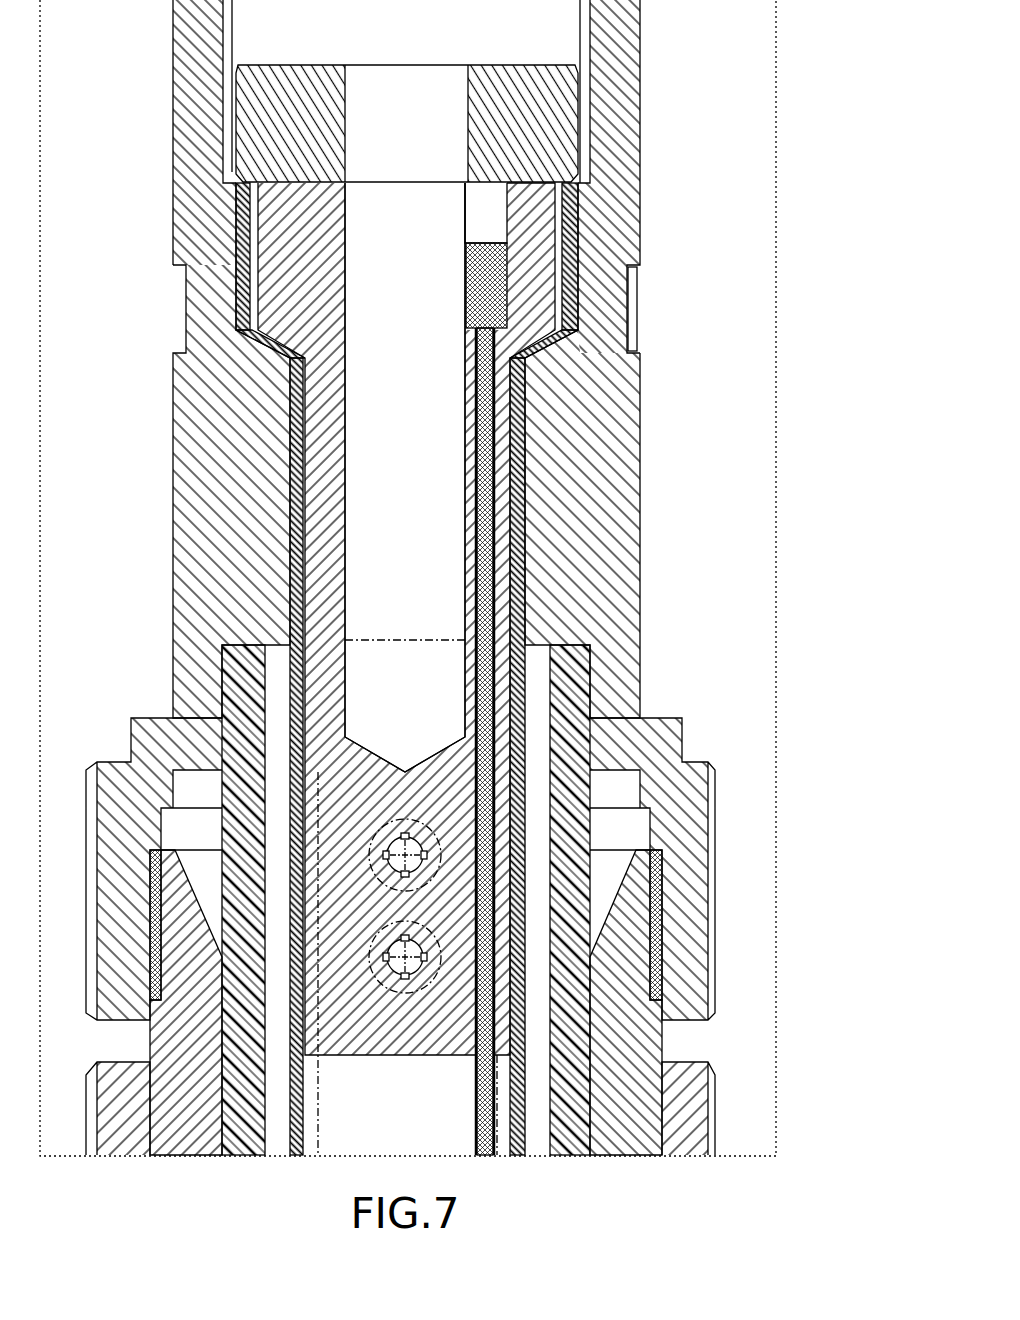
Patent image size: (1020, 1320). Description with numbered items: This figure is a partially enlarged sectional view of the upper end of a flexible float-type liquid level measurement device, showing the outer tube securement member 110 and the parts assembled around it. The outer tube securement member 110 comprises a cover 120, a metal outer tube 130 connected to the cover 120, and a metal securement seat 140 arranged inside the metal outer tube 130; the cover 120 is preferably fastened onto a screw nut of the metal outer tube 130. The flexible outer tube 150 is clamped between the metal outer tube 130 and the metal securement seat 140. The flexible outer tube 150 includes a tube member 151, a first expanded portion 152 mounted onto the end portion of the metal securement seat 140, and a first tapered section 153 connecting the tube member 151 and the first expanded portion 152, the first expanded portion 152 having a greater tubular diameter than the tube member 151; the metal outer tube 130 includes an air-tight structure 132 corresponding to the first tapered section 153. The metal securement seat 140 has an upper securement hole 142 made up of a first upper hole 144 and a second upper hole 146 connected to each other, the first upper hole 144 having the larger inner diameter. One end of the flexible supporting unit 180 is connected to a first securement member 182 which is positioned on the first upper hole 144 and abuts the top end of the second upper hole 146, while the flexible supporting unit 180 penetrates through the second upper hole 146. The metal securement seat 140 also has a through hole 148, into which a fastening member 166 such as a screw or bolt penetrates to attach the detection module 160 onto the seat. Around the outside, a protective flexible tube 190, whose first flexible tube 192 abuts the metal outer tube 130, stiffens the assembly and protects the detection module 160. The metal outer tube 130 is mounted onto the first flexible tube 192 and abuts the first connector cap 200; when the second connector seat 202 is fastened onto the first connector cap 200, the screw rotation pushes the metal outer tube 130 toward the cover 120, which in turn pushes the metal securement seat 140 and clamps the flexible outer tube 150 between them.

The outer tube securement member 110 is at (650, 72).
The cover 120 is at (250, 118).
The metal outer tube 130 is at (200, 540).
The air-tight structure 132 is at (492, 375).
The metal securement seat 140 is at (322, 485).
The upper securement hole 142 is at (712, 236).
The first upper hole 144 is at (500, 215).
The second upper hole 146 is at (625, 345).
The through hole 148 is at (403, 972).
The flexible outer tube 150 is at (96, 298).
The tube member 151 is at (295, 422).
The first expanded portion 152 is at (243, 285).
The first tapered section 153 is at (265, 358).
The detection module 160 is at (405, 640).
The fastening member 166 is at (427, 978).
The flexible supporting unit 180 is at (520, 547).
The first securement member 182 is at (470, 275).
The protective flexible tube 190 is at (600, 822).
The first flexible tube 192 is at (632, 865).
The first connector cap 200 is at (700, 803).
The second connector seat 202 is at (700, 1125).